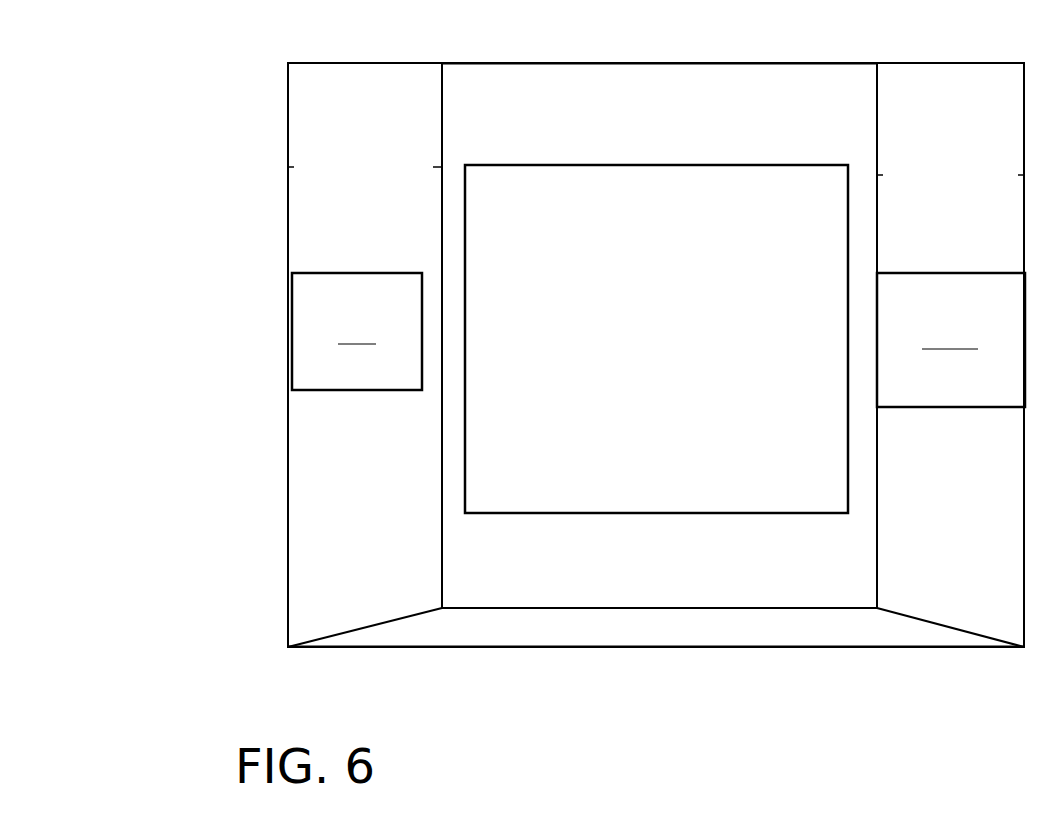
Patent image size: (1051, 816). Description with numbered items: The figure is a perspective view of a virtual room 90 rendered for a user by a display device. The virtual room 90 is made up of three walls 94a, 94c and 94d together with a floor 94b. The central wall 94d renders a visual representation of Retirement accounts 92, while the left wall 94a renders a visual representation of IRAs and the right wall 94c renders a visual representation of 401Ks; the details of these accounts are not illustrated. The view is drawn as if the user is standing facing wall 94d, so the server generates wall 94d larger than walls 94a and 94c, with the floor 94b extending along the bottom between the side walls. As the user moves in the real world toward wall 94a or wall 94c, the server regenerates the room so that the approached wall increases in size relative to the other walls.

The virtual room 90 is at (270, 132).
The Retirement accounts 92 is at (656, 339).
The wall 94a is at (357, 432).
The floor 94b is at (656, 636).
The wall 94c is at (951, 432).
The wall 94d is at (659, 323).